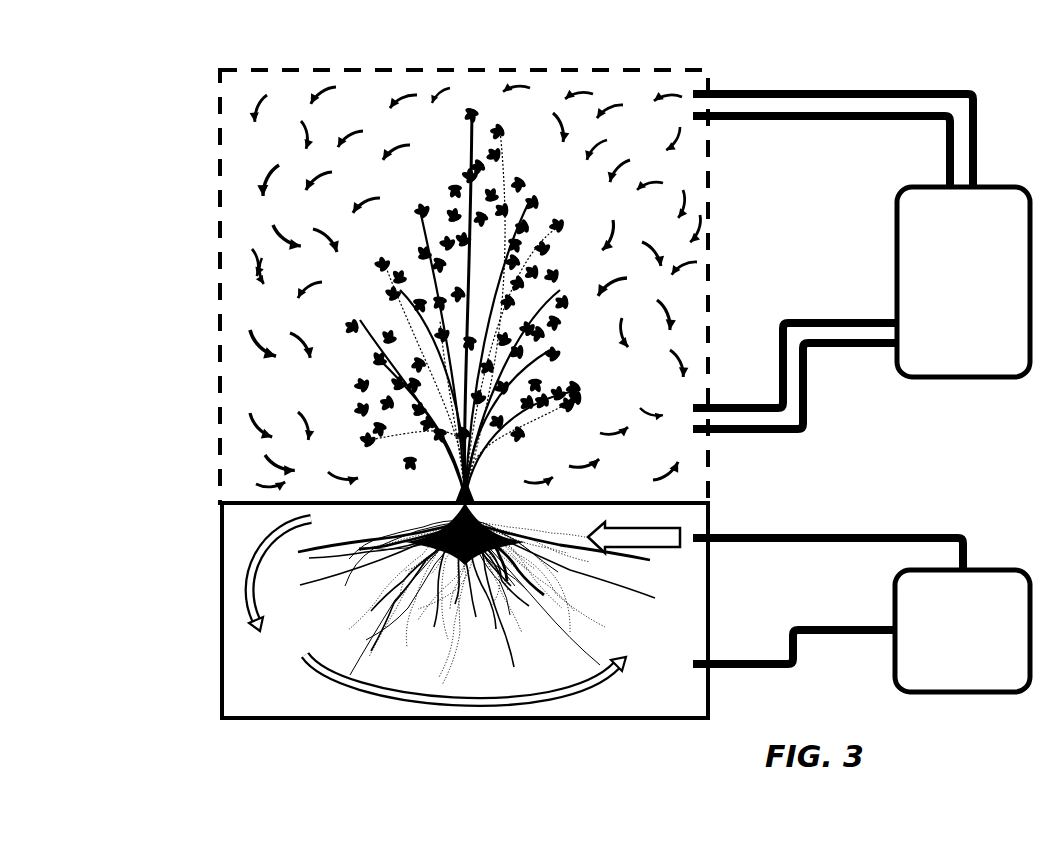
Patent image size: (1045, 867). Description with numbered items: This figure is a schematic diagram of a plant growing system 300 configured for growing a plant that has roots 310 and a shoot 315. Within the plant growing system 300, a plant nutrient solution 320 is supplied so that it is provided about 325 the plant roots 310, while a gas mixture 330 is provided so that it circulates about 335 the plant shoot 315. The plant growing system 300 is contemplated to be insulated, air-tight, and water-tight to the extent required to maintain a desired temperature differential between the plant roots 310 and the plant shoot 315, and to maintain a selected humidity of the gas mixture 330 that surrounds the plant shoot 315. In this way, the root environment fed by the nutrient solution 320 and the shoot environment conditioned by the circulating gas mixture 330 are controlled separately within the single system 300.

The plant growing system 300 is at (157, 94).
The plant roots 310 is at (310, 632).
The plant shoot 315 is at (350, 360).
The plant nutrient solution 320 is at (861, 615).
The nutrient solution flow about the roots 325 is at (673, 518).
The gas mixture 330 is at (861, 261).
The gas mixture circulation about the shoot 335 is at (322, 115).